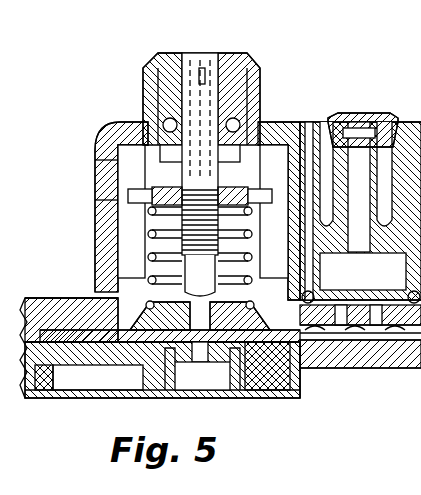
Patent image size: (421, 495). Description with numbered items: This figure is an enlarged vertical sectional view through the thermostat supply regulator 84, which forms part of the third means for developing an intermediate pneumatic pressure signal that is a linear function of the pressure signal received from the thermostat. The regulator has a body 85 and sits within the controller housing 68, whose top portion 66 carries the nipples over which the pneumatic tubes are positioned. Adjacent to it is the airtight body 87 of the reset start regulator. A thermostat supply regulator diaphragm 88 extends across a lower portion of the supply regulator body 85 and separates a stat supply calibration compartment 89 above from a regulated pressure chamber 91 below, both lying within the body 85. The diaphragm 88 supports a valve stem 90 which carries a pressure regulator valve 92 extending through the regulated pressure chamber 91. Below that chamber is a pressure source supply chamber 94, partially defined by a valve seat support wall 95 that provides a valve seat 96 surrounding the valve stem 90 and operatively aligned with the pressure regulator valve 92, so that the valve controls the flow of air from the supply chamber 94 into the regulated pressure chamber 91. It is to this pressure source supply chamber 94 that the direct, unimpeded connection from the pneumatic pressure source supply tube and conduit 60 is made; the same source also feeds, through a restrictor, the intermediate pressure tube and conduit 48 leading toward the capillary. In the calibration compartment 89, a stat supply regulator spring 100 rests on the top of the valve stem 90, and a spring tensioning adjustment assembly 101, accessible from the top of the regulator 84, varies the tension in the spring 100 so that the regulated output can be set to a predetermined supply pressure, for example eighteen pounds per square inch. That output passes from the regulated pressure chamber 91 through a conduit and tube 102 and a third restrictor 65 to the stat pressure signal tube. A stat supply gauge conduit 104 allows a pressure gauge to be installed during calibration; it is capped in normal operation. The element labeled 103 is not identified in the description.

The thermostat supply regulator 84 is at (118, 122).
The spring tensioning adjustment assembly 101 is at (262, 46).
The stat supply regulator spring 100 is at (165, 222).
The stat supply calibration compartment 89 is at (152, 145).
The supply regulator body 85 is at (102, 180).
The top portion of controller housing 66 is at (102, 203).
The controller housing 68 is at (70, 300).
The thermostat supply regulator diaphragm 88 is at (128, 330).
The valve stem 90 is at (222, 308).
The regulated pressure chamber 91 is at (85, 398).
The valve seat support wall 95 is at (128, 398).
The pressure regulator valve 92 is at (204, 398).
The valve seat 96 is at (233, 400).
The pressure source supply chamber 94 is at (287, 382).
The airtight body 87 is at (360, 177).
The retainer 103 is at (362, 120).
The stat supply gauge conduit 104 is at (338, 165).
The conduit and tube 102 is at (340, 308).
The third restrictor 65 is at (384, 322).
The intermediate pressure tube and conduit 48 is at (300, 479).
The pneumatic pressure source supply tube and conduit 60 is at (420, 478).